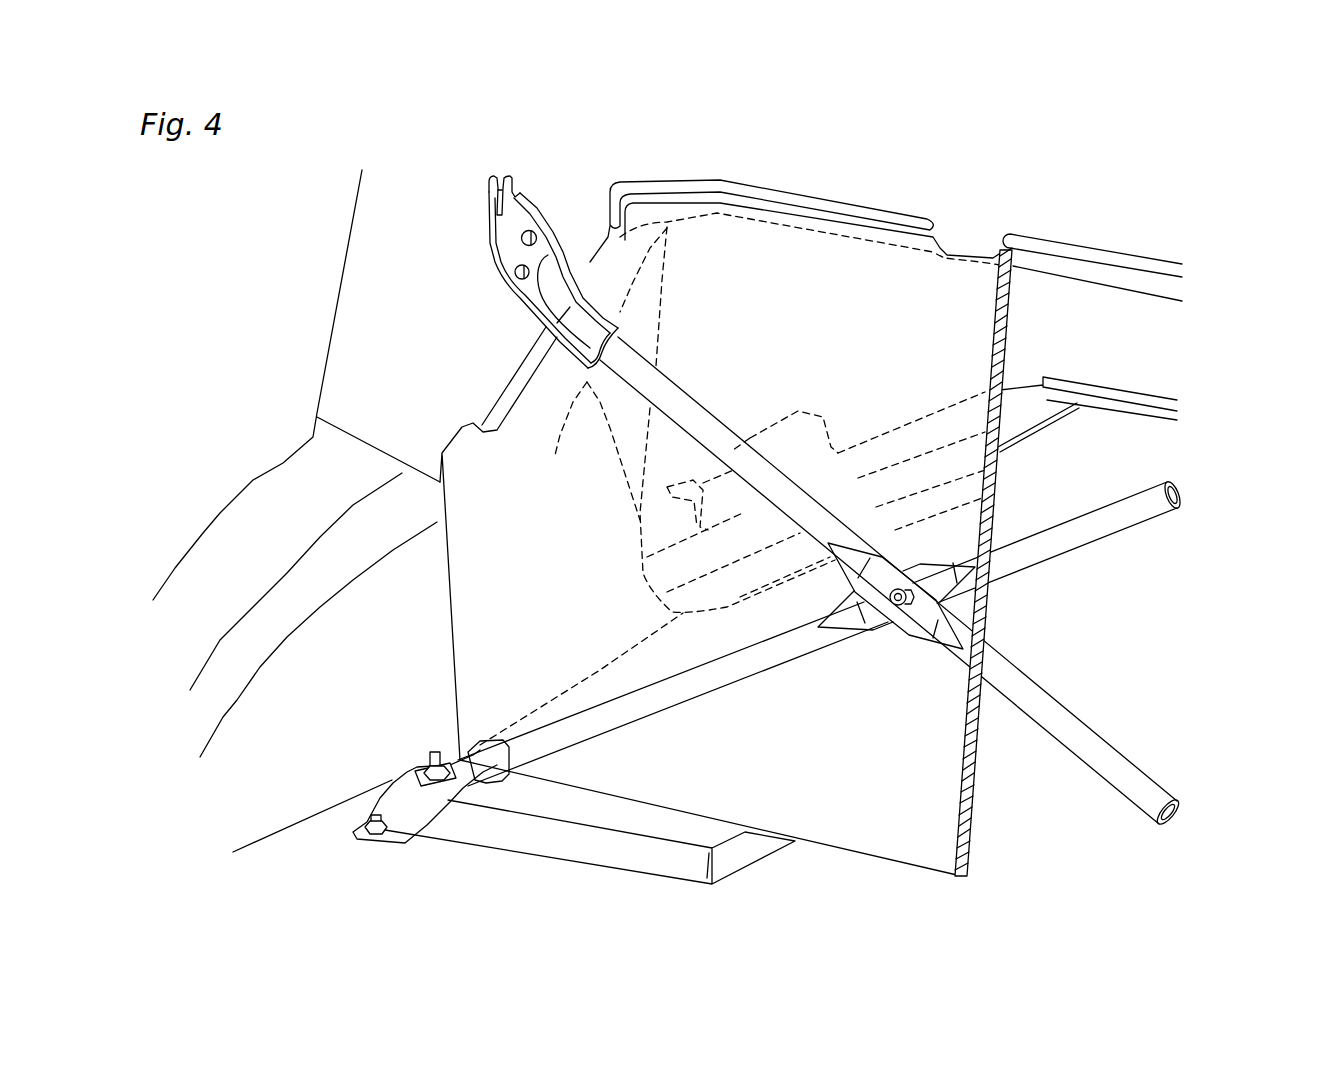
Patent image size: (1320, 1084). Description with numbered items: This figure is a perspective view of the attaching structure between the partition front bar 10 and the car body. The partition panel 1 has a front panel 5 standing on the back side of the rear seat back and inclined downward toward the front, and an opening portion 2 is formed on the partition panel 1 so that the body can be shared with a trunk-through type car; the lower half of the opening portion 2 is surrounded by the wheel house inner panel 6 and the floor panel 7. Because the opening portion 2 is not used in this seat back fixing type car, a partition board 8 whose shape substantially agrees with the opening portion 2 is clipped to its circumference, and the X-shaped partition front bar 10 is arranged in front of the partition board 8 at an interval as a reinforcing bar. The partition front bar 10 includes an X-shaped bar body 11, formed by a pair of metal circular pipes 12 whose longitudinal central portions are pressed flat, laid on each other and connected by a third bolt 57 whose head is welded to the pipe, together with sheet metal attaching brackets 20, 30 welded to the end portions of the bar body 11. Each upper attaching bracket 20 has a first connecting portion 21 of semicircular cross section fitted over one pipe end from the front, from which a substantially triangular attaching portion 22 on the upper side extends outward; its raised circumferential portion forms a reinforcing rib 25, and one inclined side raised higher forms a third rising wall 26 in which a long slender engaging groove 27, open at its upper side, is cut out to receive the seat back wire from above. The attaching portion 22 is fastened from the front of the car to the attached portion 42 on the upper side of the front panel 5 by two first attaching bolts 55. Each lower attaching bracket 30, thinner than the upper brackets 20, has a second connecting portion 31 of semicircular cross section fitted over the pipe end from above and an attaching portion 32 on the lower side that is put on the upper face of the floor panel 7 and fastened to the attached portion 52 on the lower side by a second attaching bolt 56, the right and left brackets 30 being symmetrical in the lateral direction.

The opening portion 2 is at (859, 624).
The front panel 5 is at (909, 316).
The partition panel 1 is at (1090, 220).
The wheel house inner panel 6 is at (300, 465).
The floor panel 7 is at (330, 838).
The partition board 8 is at (1007, 335).
The partition front bar 10 is at (924, 733).
The circular pipe 12 is at (849, 624).
The bar body 11 is at (1138, 871).
The attaching bracket on the upper side 20 is at (522, 243).
The first connecting portion 21 is at (570, 307).
The attaching portion on the upper side 22 is at (523, 287).
The reinforcing rib 25 is at (573, 278).
The third rising wall 26 is at (493, 217).
The engaging groove 27 is at (501, 172).
The attaching bracket on the lower side 30 is at (403, 740).
The second connecting portion 31 is at (488, 752).
The attaching portion on the lower side 32 is at (403, 800).
The attached portion on the upper side 42 is at (548, 198).
The attached portion on the lower side 52 is at (448, 807).
The first attaching bolt 55 is at (514, 269).
The second attaching bolt 56 is at (367, 820).
The third bolt 57 is at (900, 608).